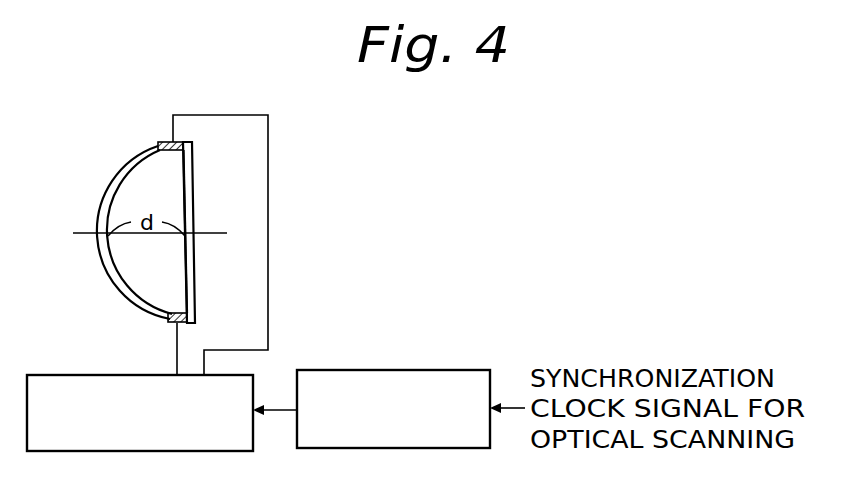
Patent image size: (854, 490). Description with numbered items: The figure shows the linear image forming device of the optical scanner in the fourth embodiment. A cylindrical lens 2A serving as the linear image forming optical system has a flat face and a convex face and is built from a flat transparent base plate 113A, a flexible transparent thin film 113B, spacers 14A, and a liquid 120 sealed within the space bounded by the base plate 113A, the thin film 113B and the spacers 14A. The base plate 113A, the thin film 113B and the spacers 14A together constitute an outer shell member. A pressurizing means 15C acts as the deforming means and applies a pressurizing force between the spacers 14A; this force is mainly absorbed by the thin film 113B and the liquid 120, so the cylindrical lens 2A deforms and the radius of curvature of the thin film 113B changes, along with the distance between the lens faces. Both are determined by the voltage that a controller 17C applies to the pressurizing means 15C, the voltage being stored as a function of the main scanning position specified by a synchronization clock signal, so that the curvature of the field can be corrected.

The cylindrical lens 2A is at (136, 216).
The spacers 14A is at (163, 141).
The flat transparent base plate 113A is at (194, 181).
The transparent thin film 113B is at (107, 188).
The liquid 120 is at (175, 273).
The pressurizing means 15C is at (55, 375).
The controller 17C is at (396, 370).